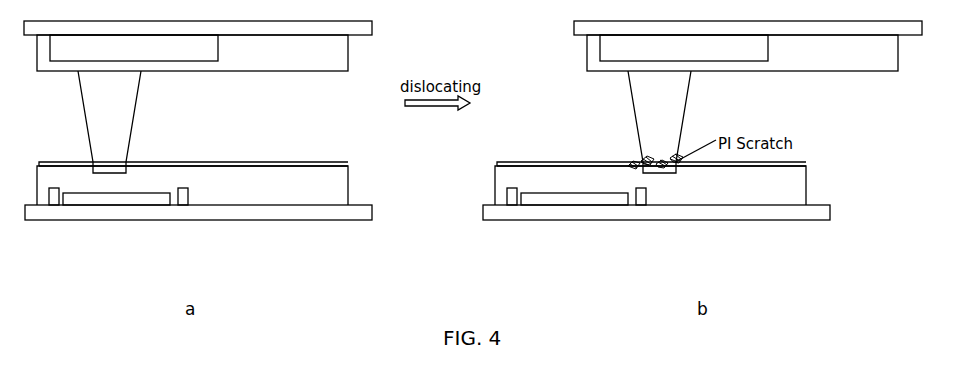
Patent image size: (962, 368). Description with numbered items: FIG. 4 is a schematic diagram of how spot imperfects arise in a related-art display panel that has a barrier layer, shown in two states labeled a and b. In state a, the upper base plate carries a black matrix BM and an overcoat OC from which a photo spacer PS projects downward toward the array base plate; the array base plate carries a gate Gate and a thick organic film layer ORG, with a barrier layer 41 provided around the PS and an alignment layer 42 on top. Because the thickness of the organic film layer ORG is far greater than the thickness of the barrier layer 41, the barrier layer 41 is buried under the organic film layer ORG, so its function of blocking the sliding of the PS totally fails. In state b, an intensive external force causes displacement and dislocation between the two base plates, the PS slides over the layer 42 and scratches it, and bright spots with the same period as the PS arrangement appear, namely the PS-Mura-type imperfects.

The barrier layer 41 is at (183, 197).
The alignment (PI) layer 42 is at (241, 163).
The black matrix BM is at (409, 48).
The overcoat layer OC is at (467, 53).
The element PS is at (384, 122).
The organic film layer ORG is at (421, 185).
The gate electrode Gate is at (345, 199).